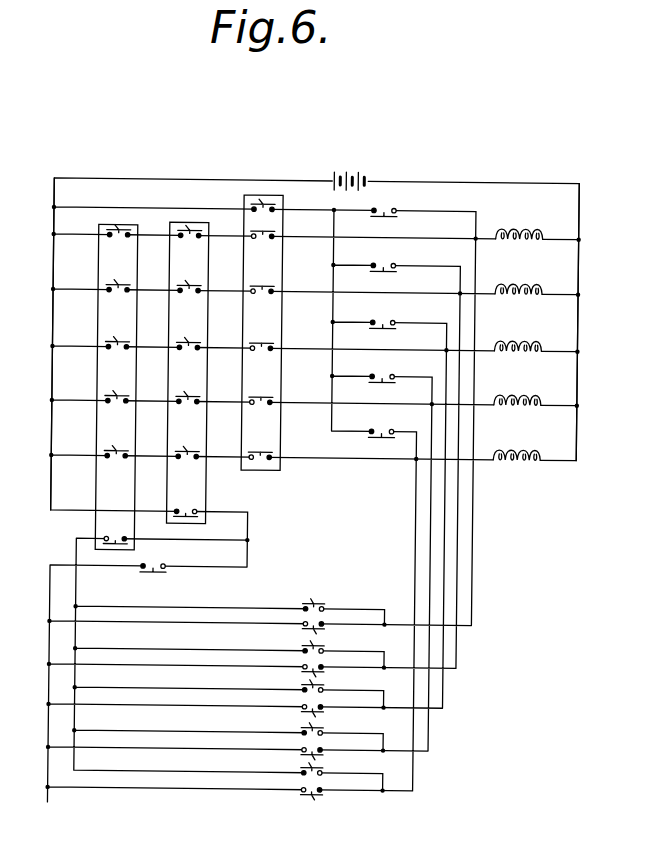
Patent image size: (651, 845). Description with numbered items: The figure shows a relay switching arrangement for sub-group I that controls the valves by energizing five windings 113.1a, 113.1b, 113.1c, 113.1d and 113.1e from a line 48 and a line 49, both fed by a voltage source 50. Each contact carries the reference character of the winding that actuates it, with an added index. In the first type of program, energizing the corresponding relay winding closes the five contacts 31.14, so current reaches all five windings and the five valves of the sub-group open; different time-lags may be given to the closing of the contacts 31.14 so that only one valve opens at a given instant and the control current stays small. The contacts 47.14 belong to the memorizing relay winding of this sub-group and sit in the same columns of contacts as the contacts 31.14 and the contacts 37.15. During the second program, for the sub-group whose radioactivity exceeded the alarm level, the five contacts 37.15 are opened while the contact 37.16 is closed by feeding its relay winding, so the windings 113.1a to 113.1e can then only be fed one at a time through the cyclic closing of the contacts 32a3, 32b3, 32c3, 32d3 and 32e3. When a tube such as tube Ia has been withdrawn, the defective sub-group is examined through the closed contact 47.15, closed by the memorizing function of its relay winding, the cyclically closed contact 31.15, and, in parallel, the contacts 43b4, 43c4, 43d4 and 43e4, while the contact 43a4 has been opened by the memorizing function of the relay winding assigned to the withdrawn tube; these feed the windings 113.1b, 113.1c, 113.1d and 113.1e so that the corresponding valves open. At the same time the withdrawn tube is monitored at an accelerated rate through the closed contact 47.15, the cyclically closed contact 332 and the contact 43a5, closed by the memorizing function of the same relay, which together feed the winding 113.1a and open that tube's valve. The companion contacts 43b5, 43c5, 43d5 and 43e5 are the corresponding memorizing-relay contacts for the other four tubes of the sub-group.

The voltage source 50 is at (338, 176).
The line 48 is at (51, 326).
The line 49 is at (576, 329).
The contacts 31-I4 31.14 is at (117, 386).
The contact 31-I5 31.15 is at (117, 530).
The contacts 47-I4 47.14 is at (189, 372).
The contact 47-I5 47.15 is at (189, 503).
The contact 37-I6 37.16 is at (262, 332).
The contacts 37-I5 37.15 is at (263, 362).
The contact 32a3 is at (391, 203).
The contact 32b3 is at (390, 258).
The contact 32c3 is at (389, 315).
The contact 32d3 is at (389, 369).
The contact 32e3 is at (388, 424).
The winding 113-Ia 113.1a is at (510, 231).
The winding 113-Ib 113.1b is at (510, 286).
The winding 113-Ic 113.1c is at (510, 343).
The winding 113-Id 113.1d is at (510, 397).
The winding 113-Ie 113.1e is at (510, 452).
The contact 332 is at (145, 574).
The contact 43a4 is at (318, 598).
The contact 43a5 is at (318, 630).
The contact 43b4 is at (326, 650).
The contact 43b5 is at (325, 674).
The contact 43c4 is at (310, 686).
The contact 43c5 is at (307, 716).
The contact 43d4 is at (323, 731).
The contact 43d5 is at (327, 758).
The contact 43e4 is at (309, 771).
The contact 43e5 is at (309, 796).